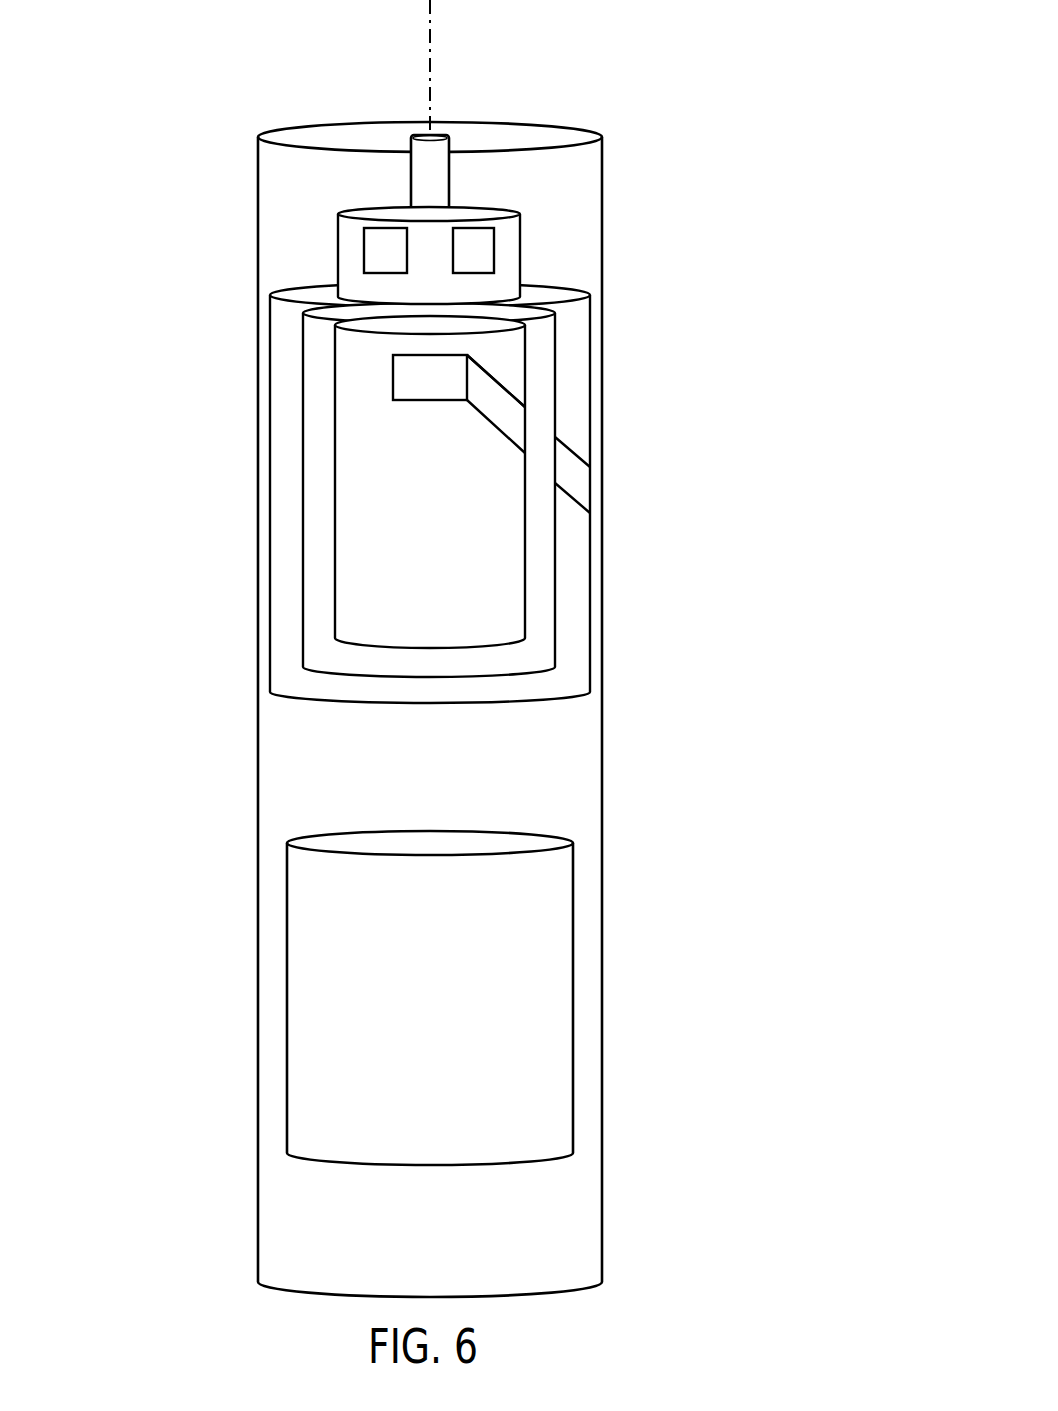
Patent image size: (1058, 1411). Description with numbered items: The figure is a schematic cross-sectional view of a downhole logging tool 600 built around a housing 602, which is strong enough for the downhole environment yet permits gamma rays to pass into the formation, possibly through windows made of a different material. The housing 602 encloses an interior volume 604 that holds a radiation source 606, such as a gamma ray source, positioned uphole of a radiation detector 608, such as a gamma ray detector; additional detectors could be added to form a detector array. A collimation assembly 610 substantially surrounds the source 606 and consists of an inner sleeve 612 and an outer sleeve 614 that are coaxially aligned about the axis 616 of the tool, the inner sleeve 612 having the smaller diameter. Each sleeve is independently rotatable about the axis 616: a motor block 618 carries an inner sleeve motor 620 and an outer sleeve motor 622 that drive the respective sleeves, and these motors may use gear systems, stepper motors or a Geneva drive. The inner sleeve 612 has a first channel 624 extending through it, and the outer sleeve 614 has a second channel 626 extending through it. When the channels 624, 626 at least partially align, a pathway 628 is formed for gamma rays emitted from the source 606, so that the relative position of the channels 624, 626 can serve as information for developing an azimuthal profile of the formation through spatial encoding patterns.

The logging tool 600 is at (670, 90).
The housing 602 is at (602, 773).
The interior volume 604 is at (573, 175).
The radiation source 606 is at (393, 377).
The radiation detector 608 is at (573, 997).
The collimation assembly 610 is at (300, 195).
The inner sleeve 612 is at (525, 367).
The outer sleeve 614 is at (573, 598).
The axis 616 is at (432, 46).
The motor block 618 is at (523, 253).
The inner sleeve motor 620 is at (364, 250).
The outer sleeve motor 622 is at (493, 250).
The first channel 624 is at (508, 412).
The second channel 626 is at (573, 473).
The pathway 628 is at (493, 430).